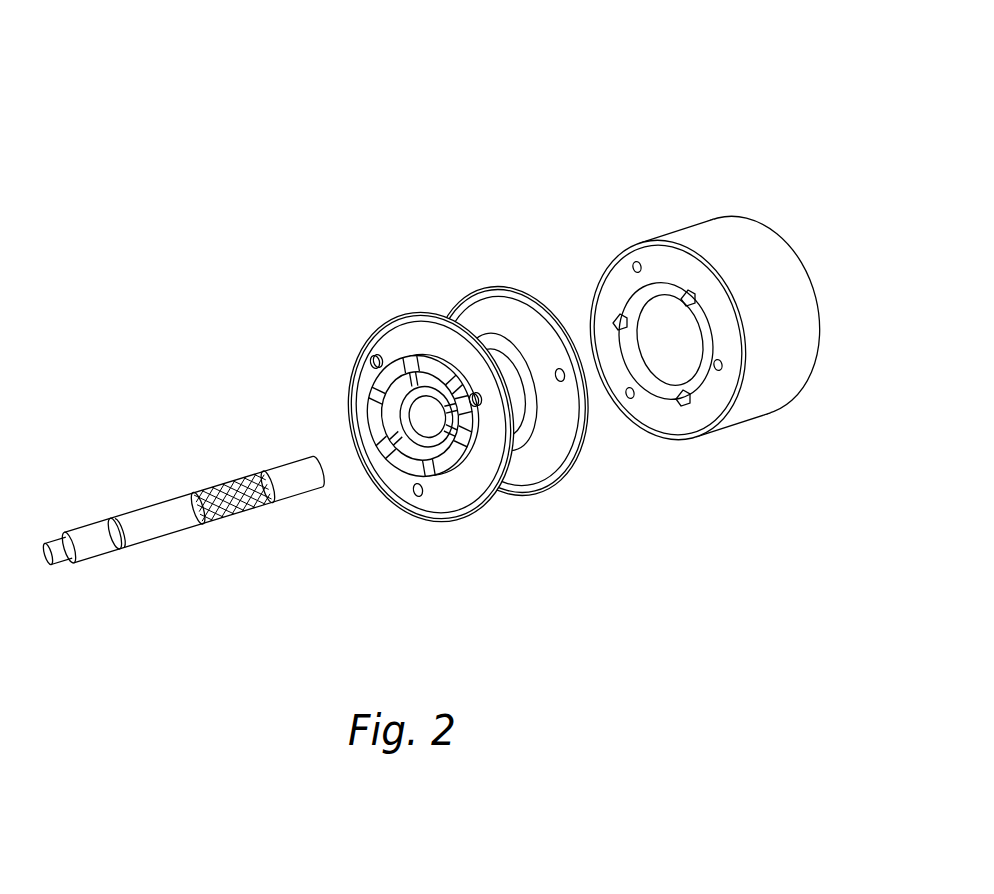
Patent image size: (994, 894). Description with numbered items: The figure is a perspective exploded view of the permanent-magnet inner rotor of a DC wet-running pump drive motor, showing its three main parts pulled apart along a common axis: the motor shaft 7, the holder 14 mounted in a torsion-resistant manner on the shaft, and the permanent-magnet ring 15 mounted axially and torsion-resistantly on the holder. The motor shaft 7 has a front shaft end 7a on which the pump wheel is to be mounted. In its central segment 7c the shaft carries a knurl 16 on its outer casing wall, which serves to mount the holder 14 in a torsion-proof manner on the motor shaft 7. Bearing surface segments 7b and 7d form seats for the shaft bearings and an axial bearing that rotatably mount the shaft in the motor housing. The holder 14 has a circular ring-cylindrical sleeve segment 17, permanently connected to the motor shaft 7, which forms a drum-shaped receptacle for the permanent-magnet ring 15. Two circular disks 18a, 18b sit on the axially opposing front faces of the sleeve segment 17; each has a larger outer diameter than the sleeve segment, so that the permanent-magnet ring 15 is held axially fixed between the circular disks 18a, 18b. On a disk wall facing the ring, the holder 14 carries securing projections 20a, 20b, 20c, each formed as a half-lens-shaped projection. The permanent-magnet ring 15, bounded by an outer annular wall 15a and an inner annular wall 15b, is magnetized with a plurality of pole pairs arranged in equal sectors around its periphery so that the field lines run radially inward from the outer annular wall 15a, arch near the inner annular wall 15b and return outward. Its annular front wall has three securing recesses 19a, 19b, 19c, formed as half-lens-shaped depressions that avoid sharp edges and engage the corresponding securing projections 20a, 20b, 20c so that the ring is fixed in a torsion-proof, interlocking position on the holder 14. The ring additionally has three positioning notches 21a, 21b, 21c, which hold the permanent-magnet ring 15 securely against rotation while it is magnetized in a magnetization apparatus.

The motor shaft 7 is at (197, 504).
The front shaft end 7a is at (88, 538).
The bearing surface segment 7b is at (143, 540).
The central segment 7c is at (220, 488).
The bearing surface segment 7d is at (292, 490).
The knurl 16 is at (217, 503).
The holder 14 is at (448, 378).
The sleeve segment 17 is at (510, 382).
The circular disk 18a is at (448, 502).
The circular disk 18b is at (560, 470).
The securing projection 20a is at (373, 362).
The securing projection 20b is at (472, 400).
The securing projection 20c is at (418, 490).
The permanent-magnet ring 15 is at (705, 281).
The outer annular wall 15a is at (735, 237).
The inner annular wall 15b is at (645, 357).
The securing recess 19a is at (644, 268).
The securing recess 19b is at (630, 396).
The securing recess 19c is at (720, 366).
The positioning notch 21a is at (619, 318).
The positioning notch 21b is at (690, 298).
The positioning notch 21c is at (684, 402).